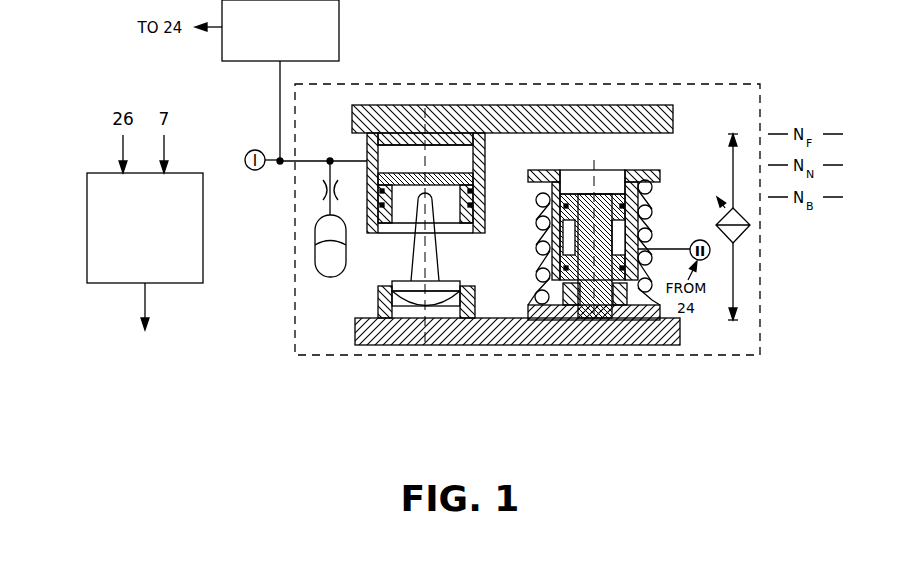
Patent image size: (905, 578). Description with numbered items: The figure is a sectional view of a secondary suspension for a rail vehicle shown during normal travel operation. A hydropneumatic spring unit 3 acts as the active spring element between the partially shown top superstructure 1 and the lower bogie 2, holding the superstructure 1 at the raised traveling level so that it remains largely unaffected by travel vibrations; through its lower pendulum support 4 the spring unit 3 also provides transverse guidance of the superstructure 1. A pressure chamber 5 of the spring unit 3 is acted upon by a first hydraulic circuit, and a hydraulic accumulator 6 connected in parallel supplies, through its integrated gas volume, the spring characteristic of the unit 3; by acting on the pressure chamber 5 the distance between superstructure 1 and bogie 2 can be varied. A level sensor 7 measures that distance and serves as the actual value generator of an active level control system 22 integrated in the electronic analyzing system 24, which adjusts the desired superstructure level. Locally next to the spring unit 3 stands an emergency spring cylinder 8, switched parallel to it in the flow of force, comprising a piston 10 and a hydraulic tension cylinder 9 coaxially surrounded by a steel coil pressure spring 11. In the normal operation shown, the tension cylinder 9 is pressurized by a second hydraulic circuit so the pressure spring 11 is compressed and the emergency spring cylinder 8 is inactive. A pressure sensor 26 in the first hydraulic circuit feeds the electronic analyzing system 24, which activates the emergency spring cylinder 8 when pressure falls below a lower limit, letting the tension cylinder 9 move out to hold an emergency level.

The superstructure 1 is at (588, 125).
The bogie 2 is at (485, 330).
The hydropneumatic spring unit 3 is at (371, 266).
The lower pendulum support 4 is at (432, 257).
The pressure chamber 5 is at (450, 155).
The hydraulic accumulator 6 is at (322, 268).
The level sensor 7 is at (739, 233).
The emergency spring cylinder 8 is at (618, 266).
The hydraulic tension cylinder 9 is at (540, 175).
The piston 10 is at (612, 300).
The pressure spring 11 is at (655, 290).
The active level control system 22 is at (262, 352).
The electronic analyzing system 24 is at (88, 218).
The pressure sensor 26 is at (340, 23).